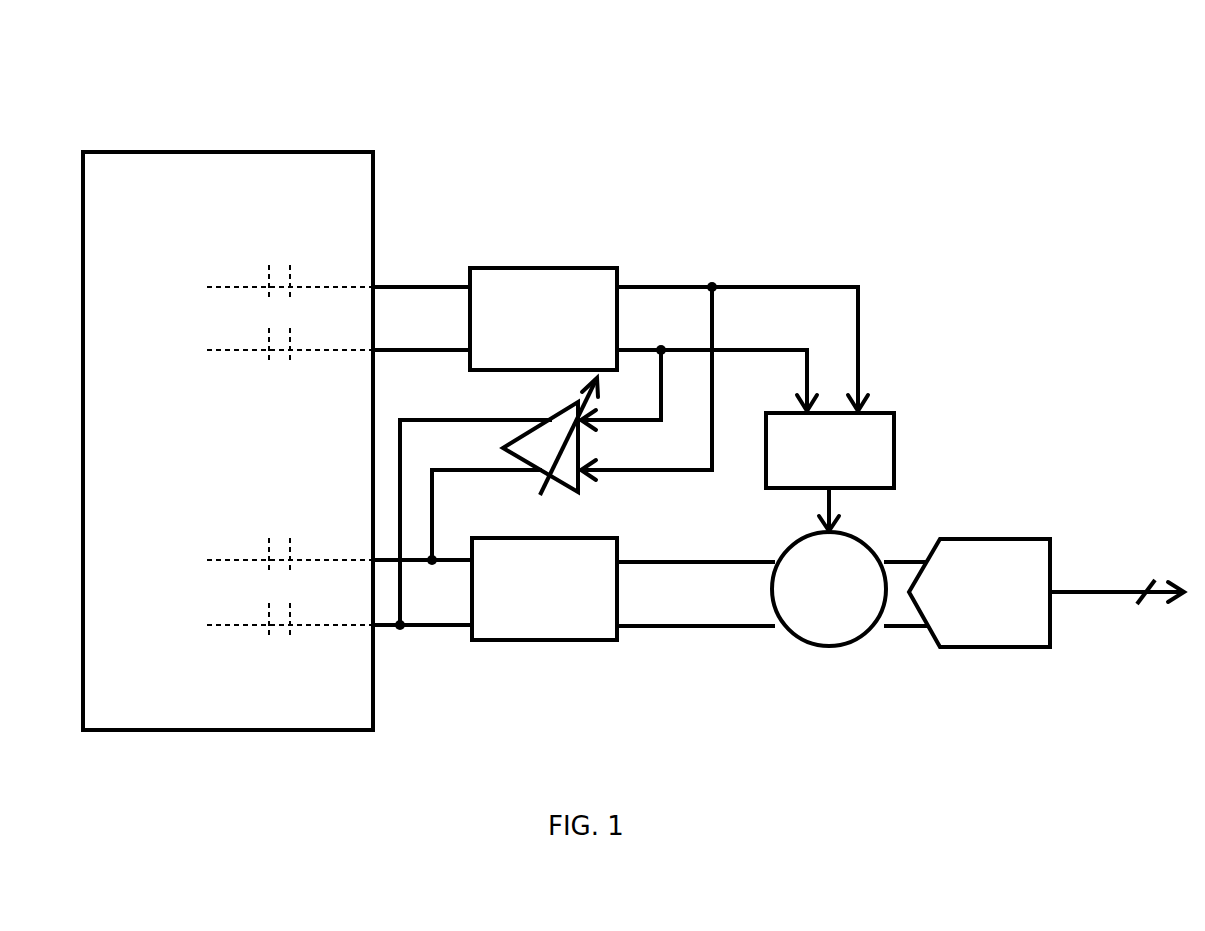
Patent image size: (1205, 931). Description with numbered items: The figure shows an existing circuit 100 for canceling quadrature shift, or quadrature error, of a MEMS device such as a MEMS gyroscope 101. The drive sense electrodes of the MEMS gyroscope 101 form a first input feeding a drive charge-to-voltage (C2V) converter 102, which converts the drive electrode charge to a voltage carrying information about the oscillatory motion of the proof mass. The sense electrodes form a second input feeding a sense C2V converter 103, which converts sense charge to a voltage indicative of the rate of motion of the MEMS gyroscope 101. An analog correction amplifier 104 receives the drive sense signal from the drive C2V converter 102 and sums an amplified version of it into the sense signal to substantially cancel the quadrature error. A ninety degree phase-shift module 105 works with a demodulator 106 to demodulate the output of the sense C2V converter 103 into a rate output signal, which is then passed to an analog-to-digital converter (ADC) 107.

The circuit 100 is at (660, 82).
The MEMS gyroscope 101 is at (253, 151).
The drive charge-to-voltage (C2V) converter 102 is at (508, 268).
The sense C2V converter 103 is at (542, 640).
The analog correction amplifier 104 is at (580, 493).
The 90 degree phase-shift module 105 is at (894, 440).
The demodulator 106 is at (857, 643).
The analog-to-digital converter (ADC) 107 is at (967, 539).